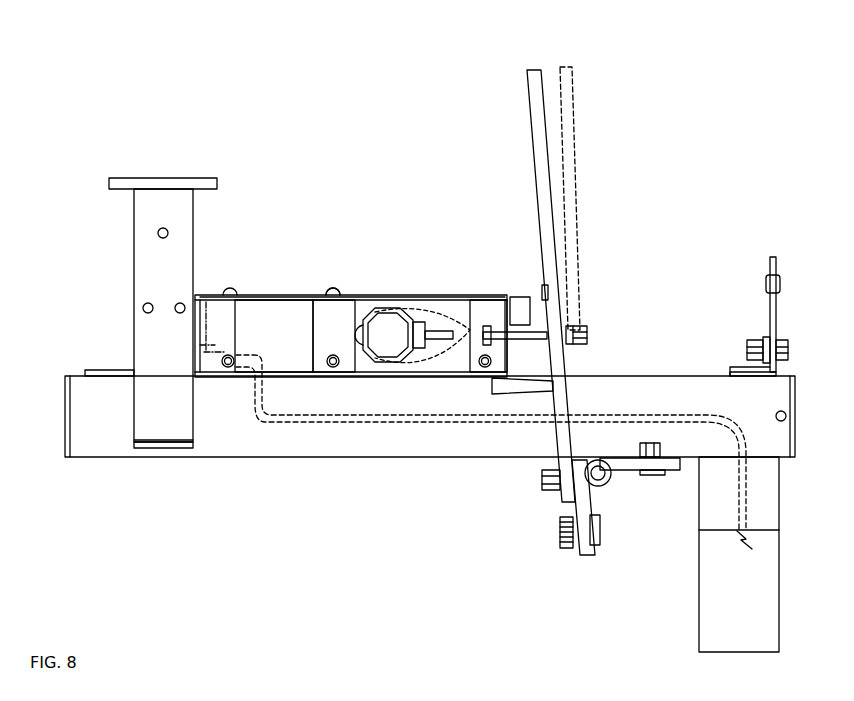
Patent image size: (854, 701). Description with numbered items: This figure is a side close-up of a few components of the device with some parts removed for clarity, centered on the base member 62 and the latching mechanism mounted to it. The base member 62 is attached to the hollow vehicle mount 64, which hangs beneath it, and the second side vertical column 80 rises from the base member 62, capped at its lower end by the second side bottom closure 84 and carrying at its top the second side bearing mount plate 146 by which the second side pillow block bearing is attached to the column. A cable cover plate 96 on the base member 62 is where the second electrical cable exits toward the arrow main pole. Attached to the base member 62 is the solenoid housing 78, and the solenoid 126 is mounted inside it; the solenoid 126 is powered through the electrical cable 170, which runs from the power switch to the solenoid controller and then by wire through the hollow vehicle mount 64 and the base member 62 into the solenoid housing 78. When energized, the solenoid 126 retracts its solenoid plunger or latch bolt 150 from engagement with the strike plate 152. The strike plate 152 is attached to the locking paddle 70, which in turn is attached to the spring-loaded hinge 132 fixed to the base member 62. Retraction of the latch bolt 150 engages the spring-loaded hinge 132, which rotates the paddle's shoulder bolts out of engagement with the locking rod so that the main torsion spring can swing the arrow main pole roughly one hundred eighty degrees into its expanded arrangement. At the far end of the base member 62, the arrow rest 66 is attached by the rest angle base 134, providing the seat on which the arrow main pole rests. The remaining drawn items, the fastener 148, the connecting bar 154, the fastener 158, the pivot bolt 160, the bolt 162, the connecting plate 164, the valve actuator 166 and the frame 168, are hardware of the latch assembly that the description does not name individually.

The base member 62 is at (612, 395).
The hollow vehicle mount 64 is at (717, 572).
The arrow rest 66 is at (773, 320).
The locking paddle 70 is at (548, 223).
The solenoid housing 78 is at (363, 298).
The second side vertical column 80 is at (176, 412).
The second side bottom closure 84 is at (148, 446).
The cable cover plate 96 is at (123, 370).
The solenoid 126 is at (300, 355).
The spring-loaded hinge 132 is at (597, 550).
The rest angle base 134 is at (735, 370).
The second side bearing mount plate 146 is at (185, 183).
The fastener 148 is at (777, 280).
The solenoid plunger or latch bolt 150 is at (452, 305).
The strike plate 152 is at (528, 303).
The connecting bar 154 is at (480, 303).
The fastener 158 is at (333, 290).
The pivot bolt 160 is at (577, 323).
The bolt 162 is at (558, 532).
The connecting plate 164 is at (668, 470).
The valve actuator 166 is at (345, 350).
The frame 168 is at (207, 305).
The electrical cable 170 is at (258, 398).